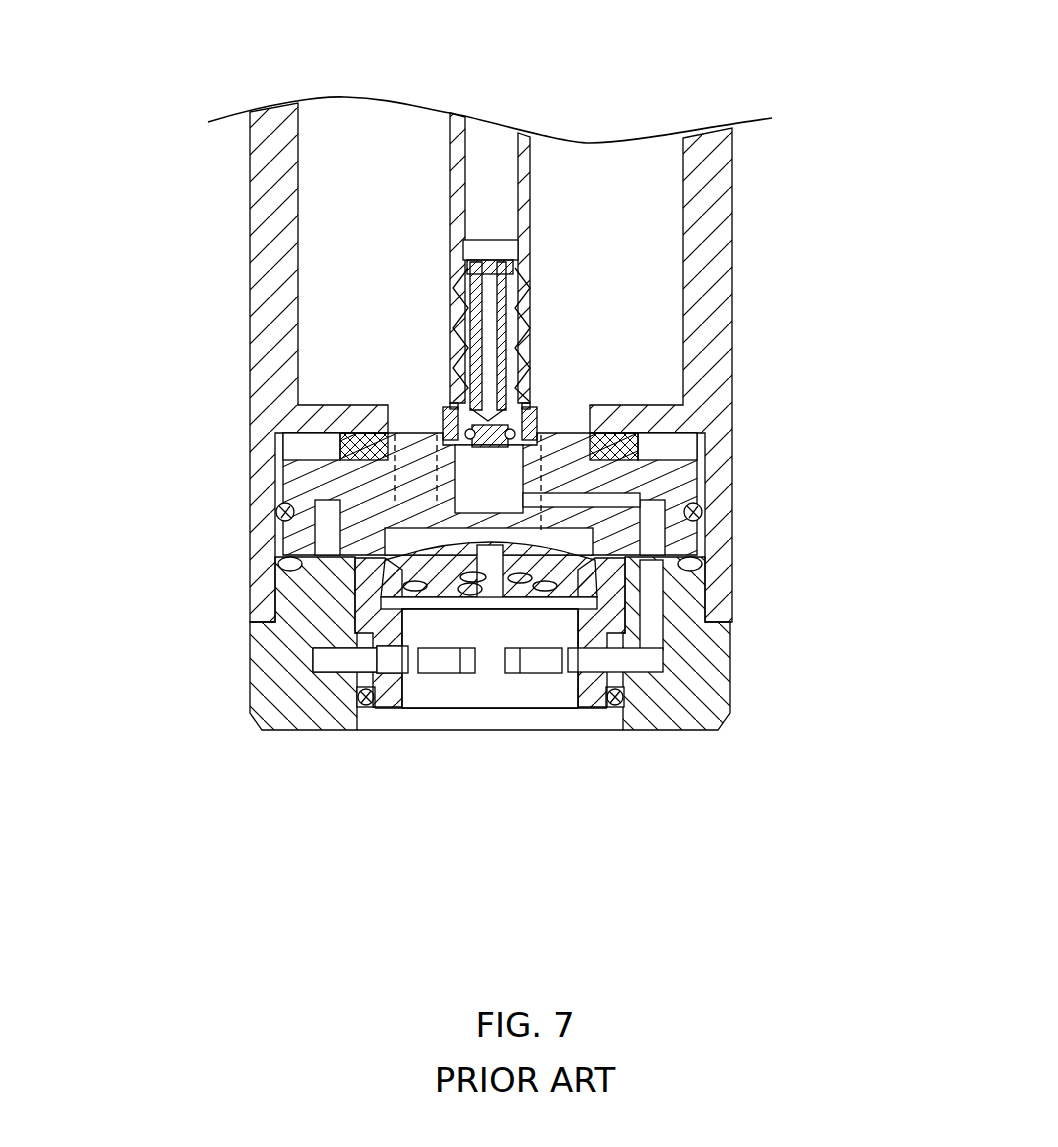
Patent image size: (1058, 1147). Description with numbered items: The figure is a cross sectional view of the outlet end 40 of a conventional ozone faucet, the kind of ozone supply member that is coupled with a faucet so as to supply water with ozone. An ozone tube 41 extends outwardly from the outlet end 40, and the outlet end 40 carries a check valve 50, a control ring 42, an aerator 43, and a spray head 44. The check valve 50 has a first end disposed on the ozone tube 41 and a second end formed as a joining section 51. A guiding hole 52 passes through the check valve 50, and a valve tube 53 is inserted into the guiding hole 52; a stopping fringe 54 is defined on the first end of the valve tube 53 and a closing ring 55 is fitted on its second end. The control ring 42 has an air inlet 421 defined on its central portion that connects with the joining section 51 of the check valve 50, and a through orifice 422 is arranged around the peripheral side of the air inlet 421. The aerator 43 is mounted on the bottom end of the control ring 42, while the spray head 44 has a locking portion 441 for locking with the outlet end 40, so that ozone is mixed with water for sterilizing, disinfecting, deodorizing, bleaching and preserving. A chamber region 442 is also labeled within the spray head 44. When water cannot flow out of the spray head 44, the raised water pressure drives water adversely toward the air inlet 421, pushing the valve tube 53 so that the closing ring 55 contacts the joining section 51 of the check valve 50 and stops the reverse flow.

The outlet end 40 is at (742, 192).
The ozone tube 41 is at (457, 170).
The control ring 42 is at (310, 480).
The air inlet 421 is at (345, 458).
The through orifice 422 is at (715, 495).
The aerator 43 is at (520, 565).
The spray head 44 is at (245, 682).
The locking portion 441 is at (704, 600).
The chamber 442 is at (443, 687).
The check valve 50 is at (446, 331).
The joining section 51 is at (443, 420).
The guiding hole 52 is at (466, 271).
The valve tube 53 is at (500, 353).
The stopping fringe 54 is at (517, 258).
The closing ring 55 is at (538, 418).